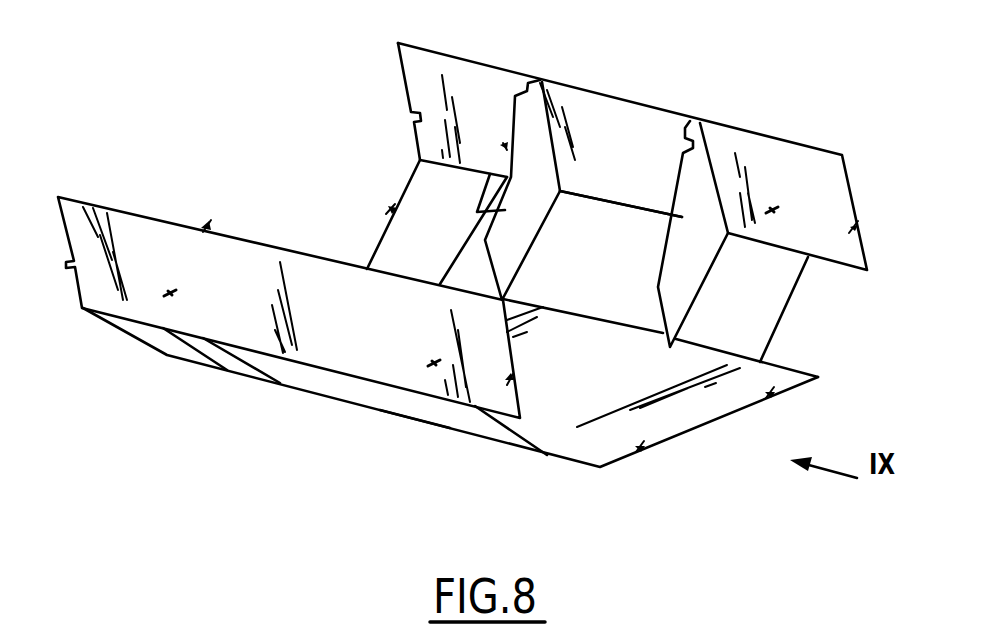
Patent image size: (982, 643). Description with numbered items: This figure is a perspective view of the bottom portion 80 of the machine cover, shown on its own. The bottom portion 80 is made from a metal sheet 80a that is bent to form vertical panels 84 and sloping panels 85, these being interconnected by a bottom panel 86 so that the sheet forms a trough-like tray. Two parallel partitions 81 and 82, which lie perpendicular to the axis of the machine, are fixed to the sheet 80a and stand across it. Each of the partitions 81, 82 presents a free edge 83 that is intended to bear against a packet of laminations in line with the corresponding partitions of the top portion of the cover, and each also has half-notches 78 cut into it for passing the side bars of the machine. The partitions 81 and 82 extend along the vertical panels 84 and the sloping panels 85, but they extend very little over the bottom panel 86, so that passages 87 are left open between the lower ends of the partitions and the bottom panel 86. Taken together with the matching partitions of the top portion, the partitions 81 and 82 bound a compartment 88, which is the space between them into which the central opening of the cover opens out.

The half-notch 78 is at (540, 80).
The bottom portion 80 is at (97, 207).
The metal sheet 80a is at (680, 418).
The partition 81 is at (522, 223).
The partition 82 is at (687, 277).
The free edge 83 is at (477, 210).
The vertical panel 84 is at (780, 163).
The sloping panel 85 is at (423, 408).
The bottom panel 86 is at (580, 437).
The passage 87 is at (624, 386).
The compartment 88 is at (634, 169).